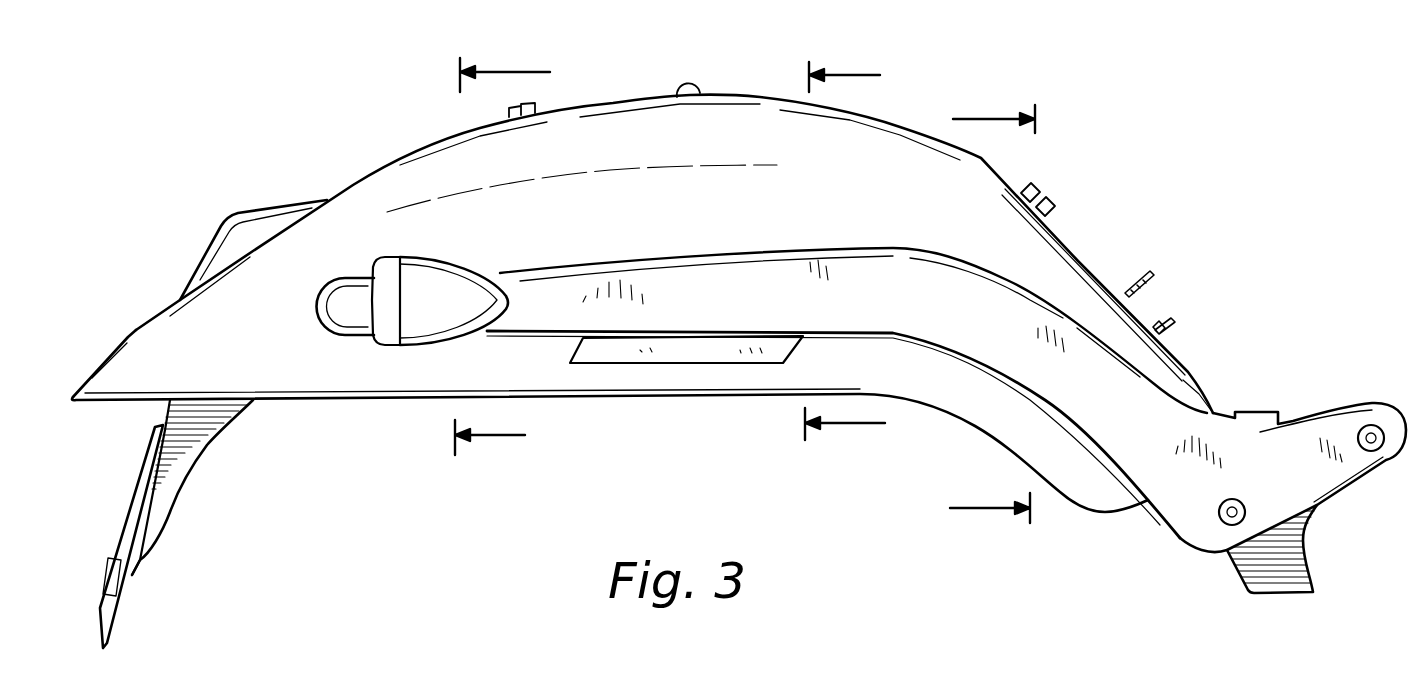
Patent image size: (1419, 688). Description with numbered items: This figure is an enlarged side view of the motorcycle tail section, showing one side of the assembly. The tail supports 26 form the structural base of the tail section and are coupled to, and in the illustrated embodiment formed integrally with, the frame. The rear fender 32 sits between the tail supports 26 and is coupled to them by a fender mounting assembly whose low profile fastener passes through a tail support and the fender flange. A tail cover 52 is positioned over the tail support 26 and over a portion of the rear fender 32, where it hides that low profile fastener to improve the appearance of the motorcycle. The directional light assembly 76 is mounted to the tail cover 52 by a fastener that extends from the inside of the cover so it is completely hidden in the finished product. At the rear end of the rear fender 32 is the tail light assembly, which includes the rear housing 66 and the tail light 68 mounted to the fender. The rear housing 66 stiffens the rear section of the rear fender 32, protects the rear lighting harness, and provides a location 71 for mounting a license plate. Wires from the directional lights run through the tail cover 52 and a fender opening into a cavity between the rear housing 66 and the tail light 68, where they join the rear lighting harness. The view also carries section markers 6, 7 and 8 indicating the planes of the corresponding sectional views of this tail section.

The tail supports 26 is at (1247, 555).
The rear fender 32 is at (907, 147).
The tail cover 52 is at (887, 260).
The rear housing 66 is at (223, 410).
The tail light 68 is at (270, 213).
The location for mounting a license plate 71 is at (146, 477).
The directional light assembly 76 is at (405, 366).
The section line 6- 6 is at (992, 310).
The section line 7- 7 is at (846, 249).
The section line 8- 8 is at (502, 253).